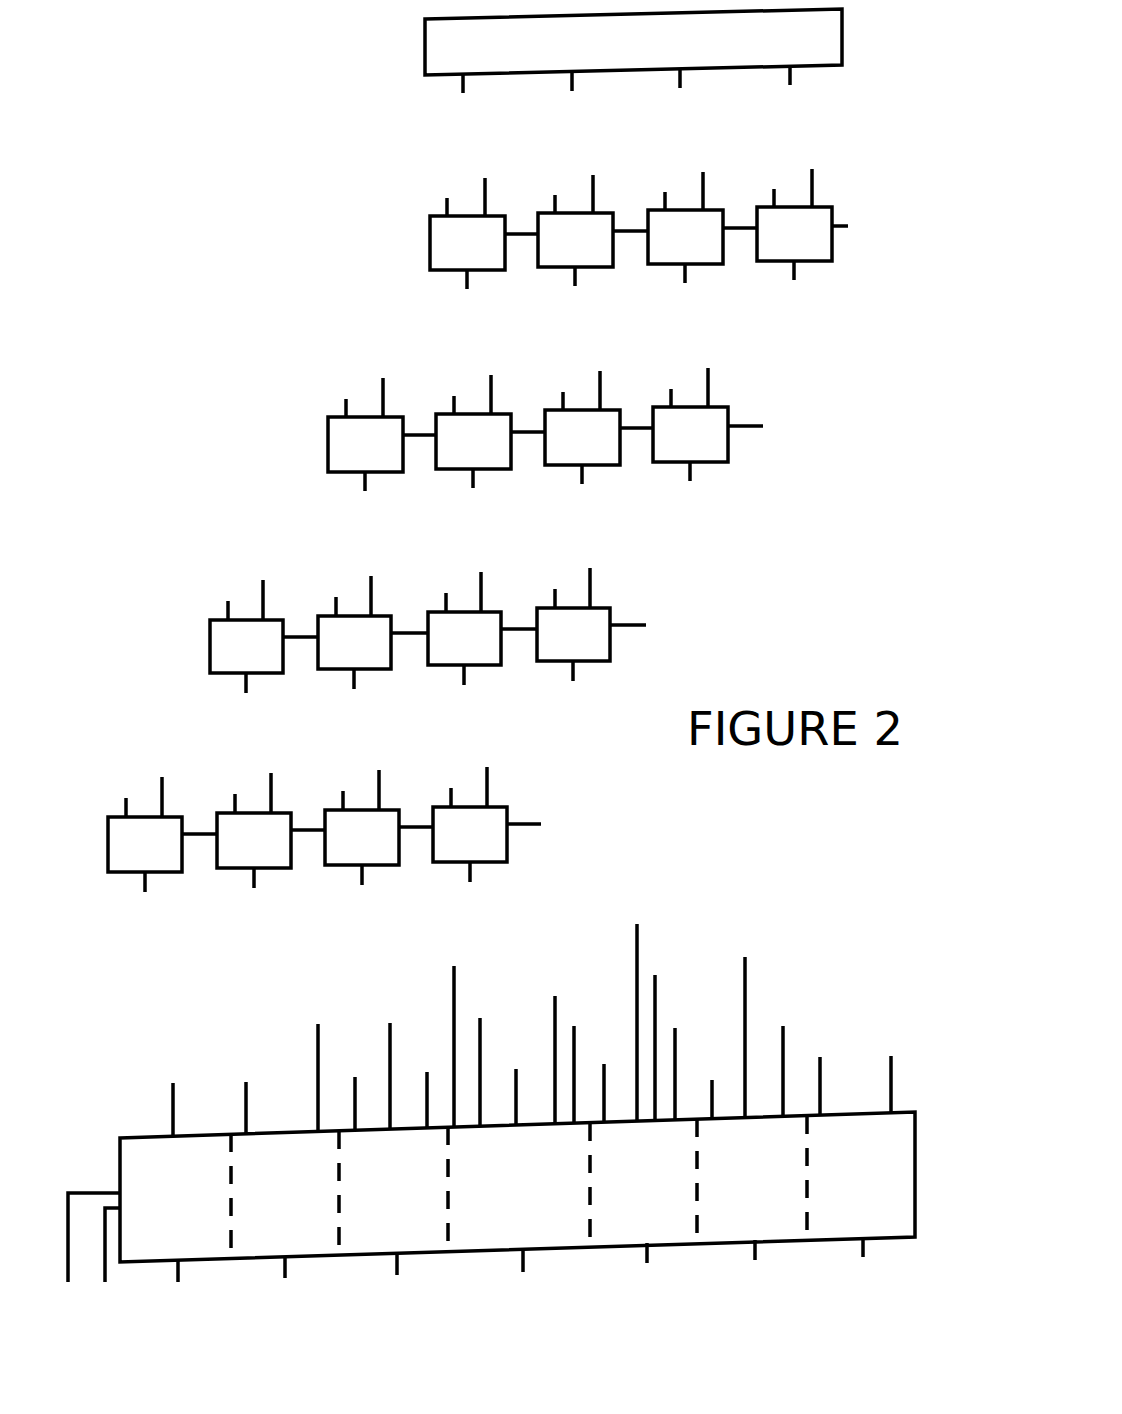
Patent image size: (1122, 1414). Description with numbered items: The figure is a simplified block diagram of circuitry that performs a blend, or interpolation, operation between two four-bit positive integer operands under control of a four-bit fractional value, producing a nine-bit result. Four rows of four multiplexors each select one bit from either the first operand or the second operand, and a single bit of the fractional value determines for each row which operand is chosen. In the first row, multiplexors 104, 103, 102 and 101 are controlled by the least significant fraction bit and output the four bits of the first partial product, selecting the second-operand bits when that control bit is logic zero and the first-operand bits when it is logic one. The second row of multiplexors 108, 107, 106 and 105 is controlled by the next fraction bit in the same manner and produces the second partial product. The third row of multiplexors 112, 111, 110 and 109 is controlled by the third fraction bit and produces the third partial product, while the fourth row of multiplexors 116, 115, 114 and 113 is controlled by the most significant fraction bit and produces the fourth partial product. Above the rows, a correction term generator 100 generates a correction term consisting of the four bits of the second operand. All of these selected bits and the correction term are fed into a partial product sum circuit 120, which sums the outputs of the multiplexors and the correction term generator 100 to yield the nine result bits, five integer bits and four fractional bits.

The correction term generator 100 is at (425, 68).
The multiplexor 101 is at (760, 249).
The multiplexor 102 is at (651, 252).
The multiplexor 103 is at (541, 255).
The multiplexor 104 is at (433, 258).
The multiplexor 105 is at (656, 450).
The multiplexor 106 is at (548, 453).
The multiplexor 107 is at (439, 457).
The multiplexor 108 is at (331, 460).
The multiplexor 109 is at (540, 649).
The multiplexor 110 is at (431, 653).
The multiplexor 111 is at (321, 657).
The multiplexor 112 is at (213, 661).
The multiplexor 113 is at (436, 850).
The multiplexor 114 is at (328, 853).
The multiplexor 115 is at (220, 856).
The multiplexor 116 is at (111, 860).
The partial product sum circuit 120 is at (120, 1157).